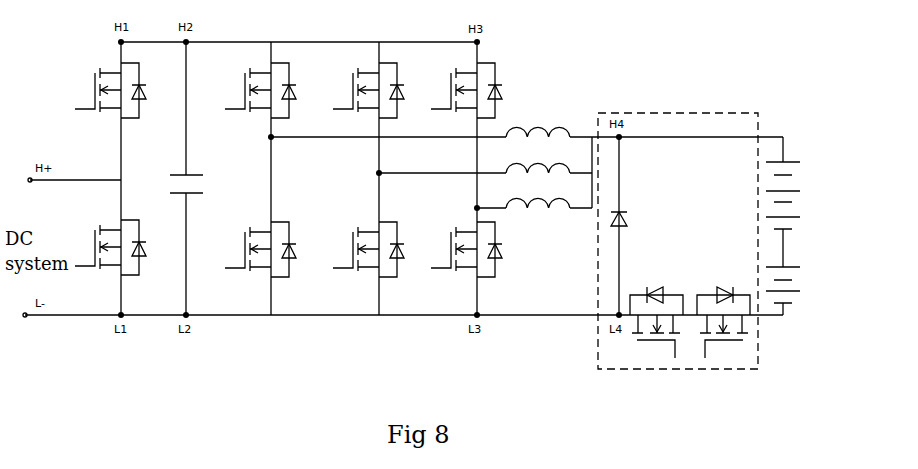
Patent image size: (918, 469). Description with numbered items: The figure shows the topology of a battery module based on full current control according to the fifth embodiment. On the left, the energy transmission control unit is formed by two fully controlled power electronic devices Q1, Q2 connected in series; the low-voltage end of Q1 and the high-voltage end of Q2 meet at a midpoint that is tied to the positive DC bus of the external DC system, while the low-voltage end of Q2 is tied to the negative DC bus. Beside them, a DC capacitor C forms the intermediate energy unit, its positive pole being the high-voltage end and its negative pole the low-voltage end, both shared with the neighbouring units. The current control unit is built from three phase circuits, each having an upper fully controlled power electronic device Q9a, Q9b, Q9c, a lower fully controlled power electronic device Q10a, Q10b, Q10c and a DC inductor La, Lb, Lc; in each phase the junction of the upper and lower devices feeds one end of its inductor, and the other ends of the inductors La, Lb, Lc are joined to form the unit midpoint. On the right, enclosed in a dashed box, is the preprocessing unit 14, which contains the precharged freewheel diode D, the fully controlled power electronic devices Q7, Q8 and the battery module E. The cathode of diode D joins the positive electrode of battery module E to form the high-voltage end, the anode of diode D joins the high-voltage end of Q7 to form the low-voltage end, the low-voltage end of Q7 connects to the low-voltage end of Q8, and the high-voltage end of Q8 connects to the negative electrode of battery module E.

The preprocessing unit 14 is at (678, 257).
The fully controlled power electronic device Q1 is at (108, 90).
The fully controlled power electronic device Q2 is at (105, 247).
The upper fully controlled power electronic device Q9a is at (256, 90).
The upper fully controlled power electronic device Q9b is at (361, 90).
The upper fully controlled power electronic device Q9c is at (459, 90).
The lower fully controlled power electronic device Q10a is at (254, 249).
The lower fully controlled power electronic device Q10b is at (358, 249).
The lower fully controlled power electronic device Q10c is at (457, 249).
The fully controlled power electronic device Q7 is at (656, 325).
The fully controlled power electronic device Q8 is at (723, 324).
The precharged freewheel diode D is at (626, 220).
The DC capacitor C is at (194, 186).
The battery module E is at (788, 226).
The DC inductor La is at (538, 125).
The DC inductor Lb is at (538, 161).
The DC inductor Lc is at (538, 213).